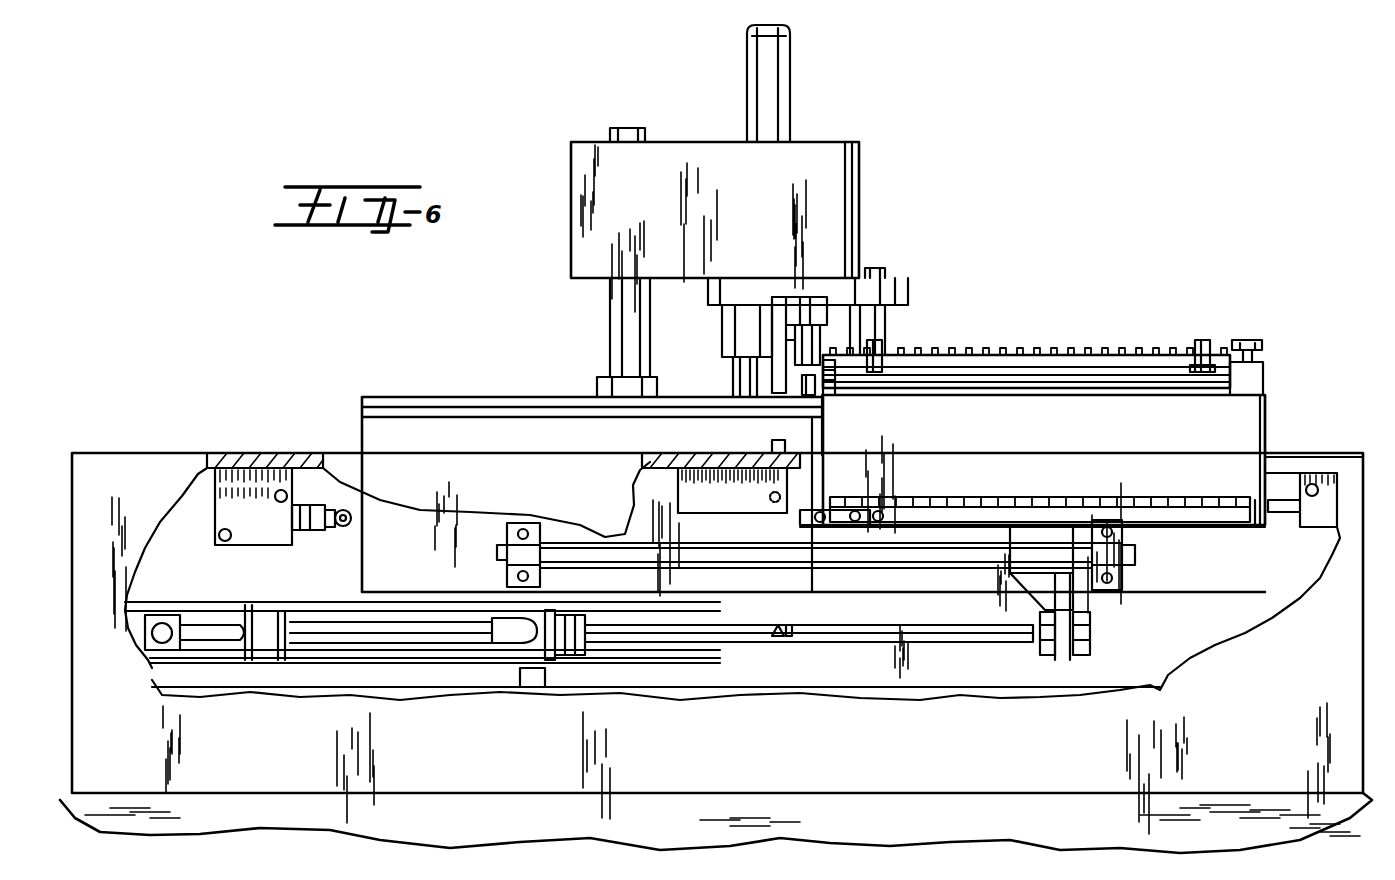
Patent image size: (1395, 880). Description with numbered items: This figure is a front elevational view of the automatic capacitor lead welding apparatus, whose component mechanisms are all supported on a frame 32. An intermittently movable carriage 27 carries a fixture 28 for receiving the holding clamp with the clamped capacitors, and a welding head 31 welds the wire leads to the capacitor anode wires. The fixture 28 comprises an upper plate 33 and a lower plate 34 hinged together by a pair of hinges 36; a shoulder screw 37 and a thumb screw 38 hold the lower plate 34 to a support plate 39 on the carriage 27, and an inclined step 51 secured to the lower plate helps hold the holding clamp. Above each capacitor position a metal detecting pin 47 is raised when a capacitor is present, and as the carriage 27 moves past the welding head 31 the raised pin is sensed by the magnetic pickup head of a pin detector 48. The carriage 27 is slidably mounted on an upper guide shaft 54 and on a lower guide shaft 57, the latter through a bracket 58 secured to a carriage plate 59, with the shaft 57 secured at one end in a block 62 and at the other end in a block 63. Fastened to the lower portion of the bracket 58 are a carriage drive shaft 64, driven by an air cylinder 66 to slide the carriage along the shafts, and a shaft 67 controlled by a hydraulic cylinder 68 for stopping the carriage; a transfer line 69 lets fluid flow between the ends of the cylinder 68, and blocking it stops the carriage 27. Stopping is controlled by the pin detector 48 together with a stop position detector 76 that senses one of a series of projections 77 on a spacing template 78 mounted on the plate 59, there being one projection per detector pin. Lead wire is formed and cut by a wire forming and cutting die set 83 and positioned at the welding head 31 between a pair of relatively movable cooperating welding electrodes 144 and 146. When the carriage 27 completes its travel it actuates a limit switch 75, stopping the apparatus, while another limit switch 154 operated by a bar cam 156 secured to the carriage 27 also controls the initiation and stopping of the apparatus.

The carriage 27 is at (1112, 474).
The fixture 28 is at (1275, 378).
The welding head 31 is at (770, 194).
The frame 32 is at (188, 460).
The upper plate 33 is at (1090, 358).
The lower plate 34 is at (1010, 375).
The hinges 36 is at (1210, 345).
The shoulder screw 37 is at (828, 392).
The thumb screw 38 is at (1252, 345).
The support plate 39 is at (1138, 385).
The metal detecting pin 47 is at (1035, 350).
The pin detector 48 is at (825, 300).
The inclined step 51 is at (938, 372).
The upper guide shaft 54 is at (495, 397).
The lower guide shaft 57 is at (690, 550).
The bracket 58 is at (1075, 602).
The carriage plate 59 is at (1255, 445).
The block 62 is at (1115, 560).
The block 63 is at (518, 560).
The carriage drive shaft 64 is at (790, 625).
The air cylinder 66 is at (255, 612).
The shaft 67 is at (758, 643).
The hydraulic cylinder 68 is at (558, 618).
The transfer line 69 is at (312, 628).
The limit switch 75 is at (1308, 525).
The stop position detector 76 is at (688, 500).
The projections 77 is at (858, 510).
The spacing template 78 is at (982, 497).
The wire forming and cutting die set 83 is at (908, 296).
The welding electrode 144 is at (820, 332).
The welding electrode 146 is at (800, 400).
The limit switch 154 is at (272, 535).
The bar cam 156 is at (815, 522).